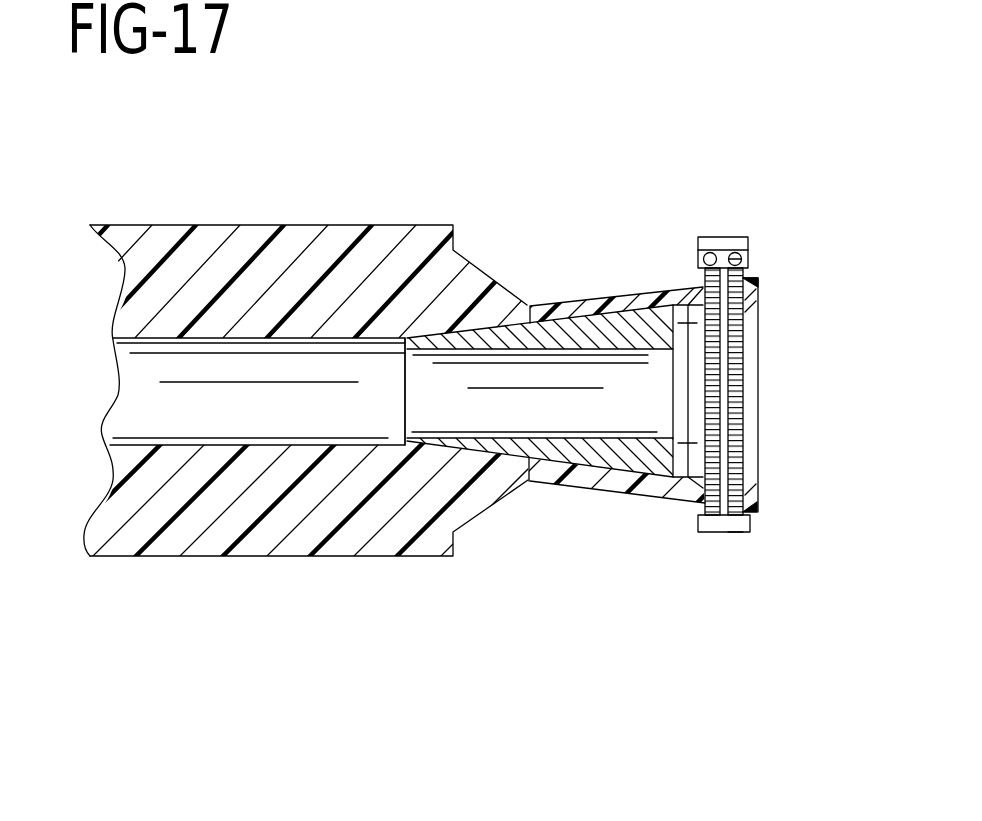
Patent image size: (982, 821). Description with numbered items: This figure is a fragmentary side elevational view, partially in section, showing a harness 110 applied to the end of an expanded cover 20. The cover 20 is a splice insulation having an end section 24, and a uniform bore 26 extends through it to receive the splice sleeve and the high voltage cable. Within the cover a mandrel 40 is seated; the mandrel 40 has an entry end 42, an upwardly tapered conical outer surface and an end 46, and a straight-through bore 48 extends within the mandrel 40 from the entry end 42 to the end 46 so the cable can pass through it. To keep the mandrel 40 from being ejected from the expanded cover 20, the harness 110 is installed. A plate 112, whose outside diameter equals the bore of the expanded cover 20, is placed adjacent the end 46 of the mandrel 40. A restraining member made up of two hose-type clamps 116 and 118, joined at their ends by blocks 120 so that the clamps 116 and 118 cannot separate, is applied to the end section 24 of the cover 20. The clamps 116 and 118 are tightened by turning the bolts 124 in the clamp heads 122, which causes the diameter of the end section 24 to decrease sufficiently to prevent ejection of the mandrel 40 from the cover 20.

The splice insulation or cover 20 is at (211, 584).
The end section 24 is at (640, 497).
The bore 26 is at (367, 347).
The mandrel 40 is at (577, 303).
The entry end 42 is at (404, 405).
The end 46 is at (672, 358).
The straight-through bore 48 is at (620, 440).
The harness 110 is at (786, 413).
The plate 112 is at (710, 527).
The hose-type clamp 116 is at (706, 345).
The hose-type clamp 118 is at (736, 403).
The block 120 is at (727, 237).
The clamp head 122 is at (687, 240).
The bolt 124 is at (758, 280).